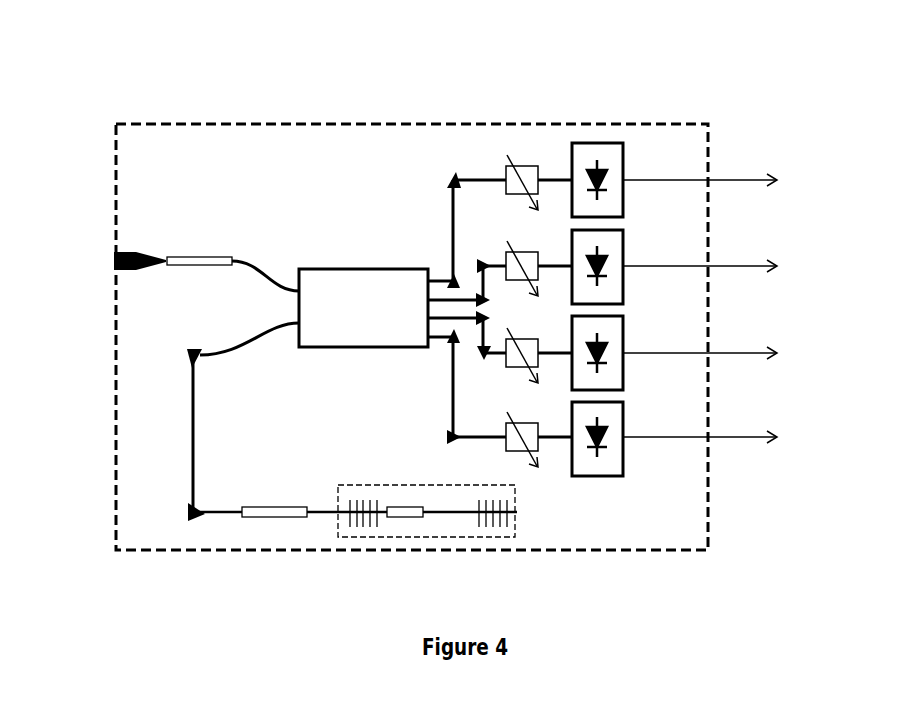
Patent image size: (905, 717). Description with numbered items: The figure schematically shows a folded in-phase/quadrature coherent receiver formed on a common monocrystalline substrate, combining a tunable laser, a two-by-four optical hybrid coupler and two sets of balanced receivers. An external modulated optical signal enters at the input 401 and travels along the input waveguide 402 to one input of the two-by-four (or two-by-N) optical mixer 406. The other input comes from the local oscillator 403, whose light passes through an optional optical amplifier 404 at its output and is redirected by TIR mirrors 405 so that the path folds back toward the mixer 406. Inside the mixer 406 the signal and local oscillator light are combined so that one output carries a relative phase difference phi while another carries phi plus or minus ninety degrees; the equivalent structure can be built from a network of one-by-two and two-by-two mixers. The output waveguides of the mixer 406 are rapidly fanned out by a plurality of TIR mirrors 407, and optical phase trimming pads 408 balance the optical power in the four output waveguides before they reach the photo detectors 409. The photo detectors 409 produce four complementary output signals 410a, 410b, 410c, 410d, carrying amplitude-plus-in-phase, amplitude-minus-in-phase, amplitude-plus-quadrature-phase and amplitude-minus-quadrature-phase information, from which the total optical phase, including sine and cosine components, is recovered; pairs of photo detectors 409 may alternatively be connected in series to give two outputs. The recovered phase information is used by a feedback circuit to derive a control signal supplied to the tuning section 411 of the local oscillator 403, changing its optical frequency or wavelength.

The pump light source 401 is at (113, 240).
The optical isolator 402 is at (218, 250).
The local oscillator 403 is at (520, 508).
The optical amplifier 404 is at (300, 517).
The TIR mirrors 405 is at (207, 520).
The optical mixer 406 is at (360, 257).
The TIR mirrors 407 is at (442, 167).
The optical phase trimming pads 408 is at (522, 160).
The photo detectors 409 is at (593, 138).
The output signal 410a is at (729, 186).
The output signal 410b is at (729, 262).
The output signal 410c is at (729, 354).
The output signal 410d is at (729, 432).
The tuning section 411 is at (405, 514).